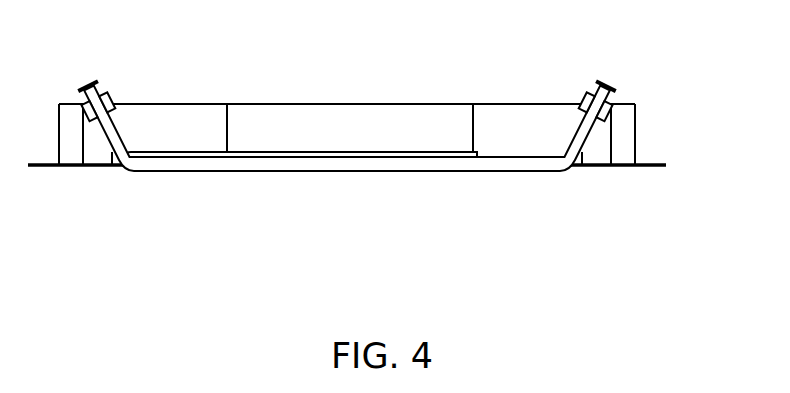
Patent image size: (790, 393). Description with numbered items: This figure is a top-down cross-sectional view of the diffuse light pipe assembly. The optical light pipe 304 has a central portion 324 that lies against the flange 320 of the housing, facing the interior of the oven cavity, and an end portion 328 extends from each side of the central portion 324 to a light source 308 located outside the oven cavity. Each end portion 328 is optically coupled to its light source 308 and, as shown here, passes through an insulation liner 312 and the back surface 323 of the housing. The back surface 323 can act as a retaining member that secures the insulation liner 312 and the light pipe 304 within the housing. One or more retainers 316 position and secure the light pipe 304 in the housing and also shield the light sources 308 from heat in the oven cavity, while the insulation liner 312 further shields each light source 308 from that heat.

The optical light pipe 304 is at (185, 171).
The light source 308 is at (92, 82).
The insulation liner 312 is at (192, 119).
The retainer 316 is at (111, 94).
The flange 320 is at (648, 163).
The back surface 323 is at (389, 104).
The central portion 324 is at (342, 175).
The end portion 328 is at (110, 130).